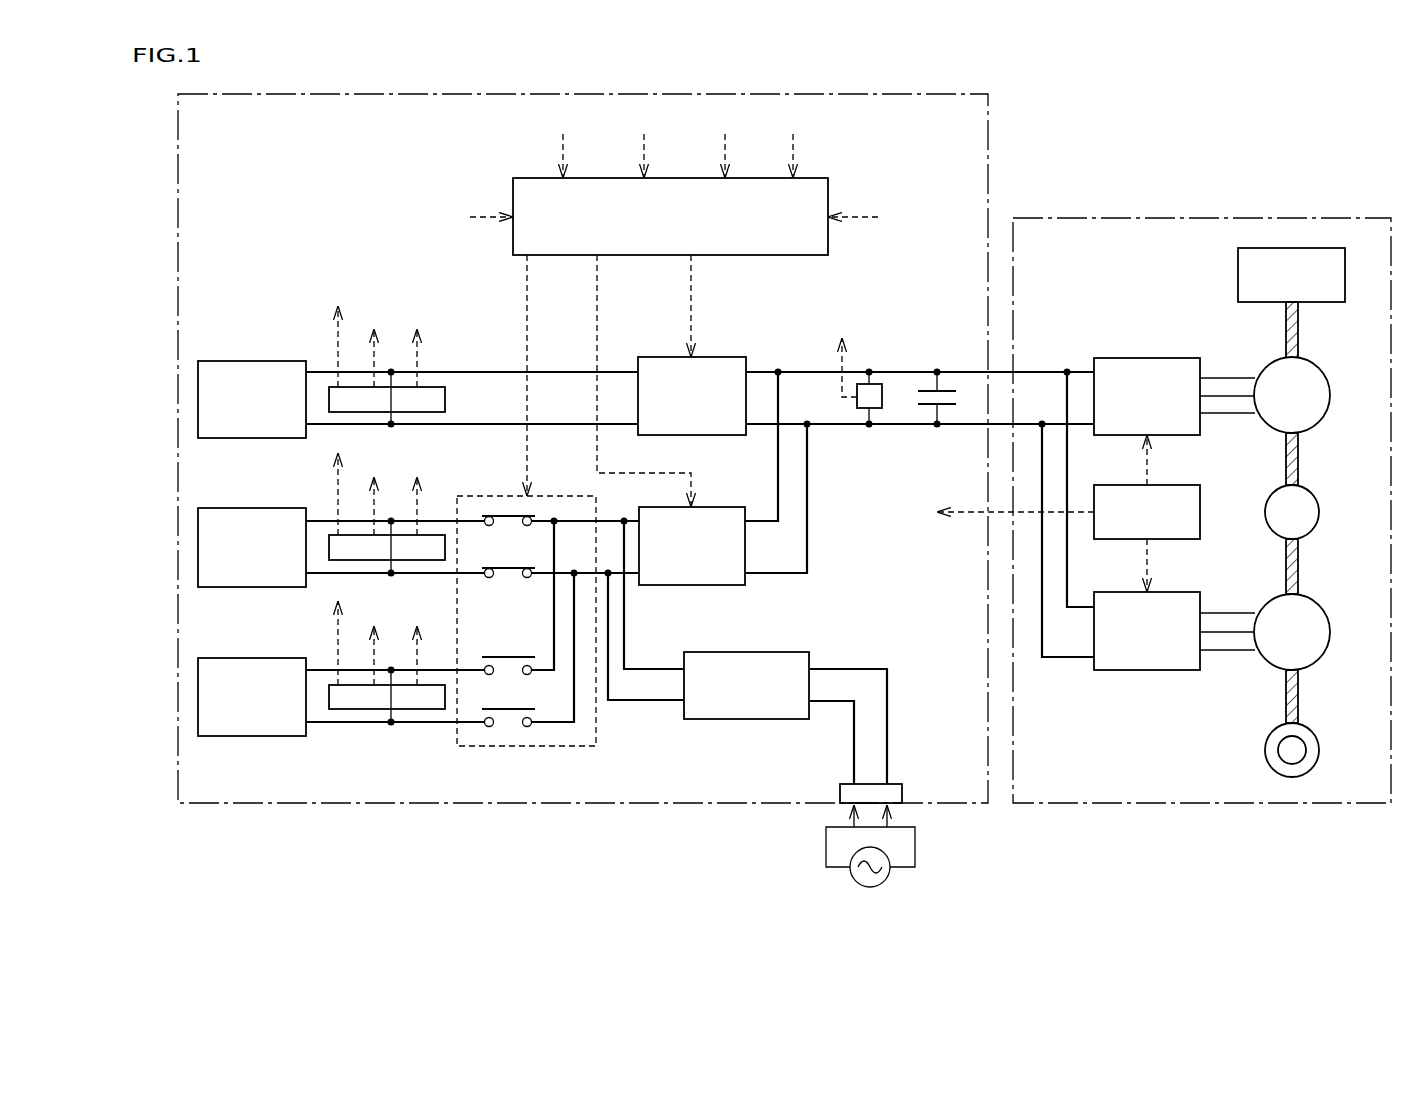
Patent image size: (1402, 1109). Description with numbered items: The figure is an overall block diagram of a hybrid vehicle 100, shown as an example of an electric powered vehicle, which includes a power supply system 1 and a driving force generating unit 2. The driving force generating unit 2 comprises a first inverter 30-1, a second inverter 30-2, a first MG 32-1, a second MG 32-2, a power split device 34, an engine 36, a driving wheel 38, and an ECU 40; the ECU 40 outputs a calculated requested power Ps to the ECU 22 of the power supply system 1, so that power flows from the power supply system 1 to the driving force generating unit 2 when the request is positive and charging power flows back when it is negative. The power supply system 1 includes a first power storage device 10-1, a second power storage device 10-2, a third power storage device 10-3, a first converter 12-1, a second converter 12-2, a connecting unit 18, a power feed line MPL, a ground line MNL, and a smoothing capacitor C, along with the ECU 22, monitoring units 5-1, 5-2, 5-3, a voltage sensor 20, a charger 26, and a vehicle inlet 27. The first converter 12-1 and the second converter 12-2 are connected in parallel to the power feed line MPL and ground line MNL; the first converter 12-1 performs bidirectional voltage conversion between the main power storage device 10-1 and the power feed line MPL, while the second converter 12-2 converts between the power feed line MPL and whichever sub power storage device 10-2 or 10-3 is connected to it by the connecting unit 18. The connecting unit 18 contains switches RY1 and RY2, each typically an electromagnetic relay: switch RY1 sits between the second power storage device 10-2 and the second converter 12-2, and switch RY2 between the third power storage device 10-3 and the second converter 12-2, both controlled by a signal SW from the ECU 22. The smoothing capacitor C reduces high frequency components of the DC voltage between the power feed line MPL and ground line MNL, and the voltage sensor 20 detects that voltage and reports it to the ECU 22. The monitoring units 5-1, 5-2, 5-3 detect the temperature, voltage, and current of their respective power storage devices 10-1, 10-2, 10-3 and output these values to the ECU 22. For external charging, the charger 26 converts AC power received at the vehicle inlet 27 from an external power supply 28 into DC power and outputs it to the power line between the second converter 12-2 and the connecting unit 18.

The hybrid vehicle 100 is at (1270, 104).
The power supply system 1 is at (988, 110).
The driving force generating unit 2 is at (1325, 216).
The monitoring unit 5-1 is at (435, 387).
The monitoring unit 5-2 is at (435, 535).
The monitoring unit 5-3 is at (415, 722).
The first power storage device 10-1 is at (238, 361).
The second power storage device 10-2 is at (238, 508).
The third power storage device 10-3 is at (238, 658).
The first converter 12-1 is at (706, 357).
The second converter 12-2 is at (706, 507).
The connecting unit 18 is at (597, 727).
The voltage sensor 20 is at (890, 408).
The ECU 22 is at (782, 256).
The charger 26 is at (770, 652).
The vehicle inlet 27 is at (895, 786).
The external power supply 28 is at (887, 880).
The first inverter 30-1 is at (1168, 358).
The second inverter 30-2 is at (1168, 592).
The first MG 32-1 is at (1318, 362).
The second MG 32-2 is at (1318, 600).
The power split device 34 is at (1310, 492).
The engine 36 is at (1238, 277).
The driving wheel 38 is at (1265, 751).
The ECU 40 is at (1160, 485).
The switch RY1 is at (510, 585).
The switch RY2 is at (508, 732).
The smoothing capacitor C is at (945, 390).
The power feed line MPL is at (900, 370).
The ground line MNL is at (918, 426).